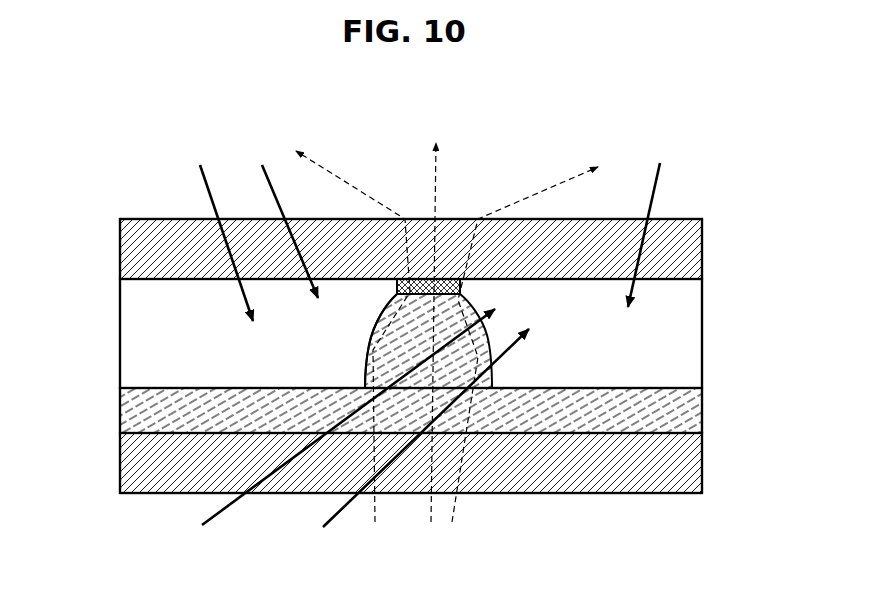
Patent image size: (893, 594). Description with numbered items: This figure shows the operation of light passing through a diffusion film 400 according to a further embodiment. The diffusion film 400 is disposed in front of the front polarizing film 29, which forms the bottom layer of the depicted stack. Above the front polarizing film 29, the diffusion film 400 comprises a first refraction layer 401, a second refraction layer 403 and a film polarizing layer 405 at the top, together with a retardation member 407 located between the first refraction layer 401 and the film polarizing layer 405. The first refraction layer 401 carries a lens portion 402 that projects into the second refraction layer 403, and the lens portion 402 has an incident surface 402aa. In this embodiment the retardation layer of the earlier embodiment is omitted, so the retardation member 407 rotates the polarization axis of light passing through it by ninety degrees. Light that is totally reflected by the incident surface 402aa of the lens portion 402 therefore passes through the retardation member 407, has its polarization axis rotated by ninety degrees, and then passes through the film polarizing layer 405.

The diffusion film 400 is at (98, 326).
The film polarizing layer 405 is at (695, 252).
The second refraction layer 403 is at (690, 331).
The first refraction layer 401 is at (700, 412).
The front polarizing film 29 is at (695, 463).
The lens portion 402 is at (483, 312).
The incident surface 402aa is at (382, 310).
The retardation member 407 is at (397, 289).